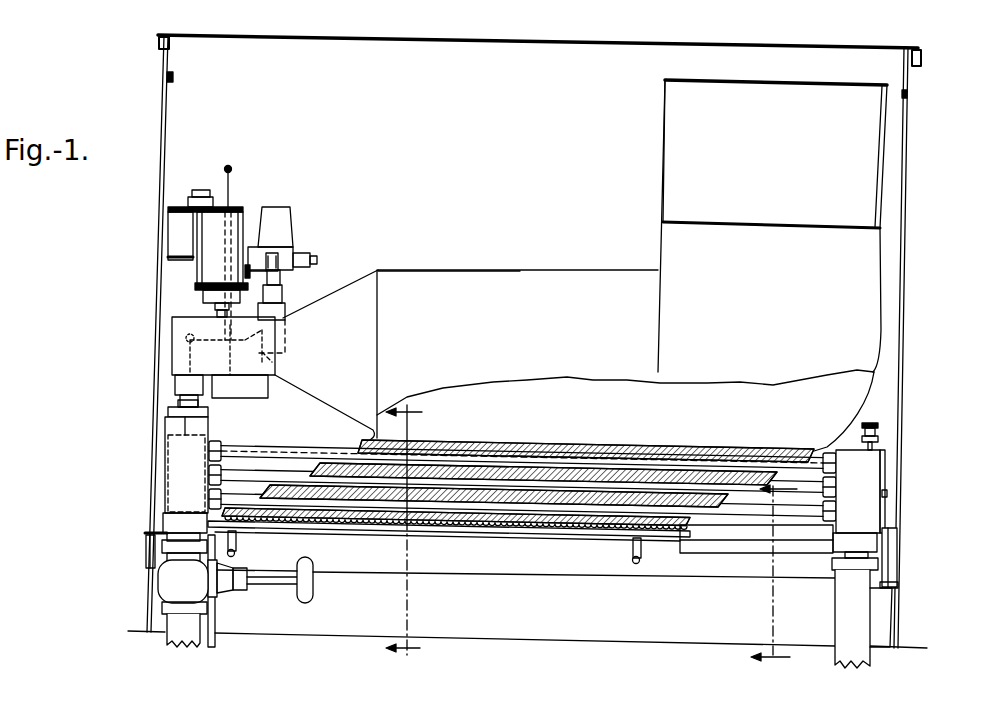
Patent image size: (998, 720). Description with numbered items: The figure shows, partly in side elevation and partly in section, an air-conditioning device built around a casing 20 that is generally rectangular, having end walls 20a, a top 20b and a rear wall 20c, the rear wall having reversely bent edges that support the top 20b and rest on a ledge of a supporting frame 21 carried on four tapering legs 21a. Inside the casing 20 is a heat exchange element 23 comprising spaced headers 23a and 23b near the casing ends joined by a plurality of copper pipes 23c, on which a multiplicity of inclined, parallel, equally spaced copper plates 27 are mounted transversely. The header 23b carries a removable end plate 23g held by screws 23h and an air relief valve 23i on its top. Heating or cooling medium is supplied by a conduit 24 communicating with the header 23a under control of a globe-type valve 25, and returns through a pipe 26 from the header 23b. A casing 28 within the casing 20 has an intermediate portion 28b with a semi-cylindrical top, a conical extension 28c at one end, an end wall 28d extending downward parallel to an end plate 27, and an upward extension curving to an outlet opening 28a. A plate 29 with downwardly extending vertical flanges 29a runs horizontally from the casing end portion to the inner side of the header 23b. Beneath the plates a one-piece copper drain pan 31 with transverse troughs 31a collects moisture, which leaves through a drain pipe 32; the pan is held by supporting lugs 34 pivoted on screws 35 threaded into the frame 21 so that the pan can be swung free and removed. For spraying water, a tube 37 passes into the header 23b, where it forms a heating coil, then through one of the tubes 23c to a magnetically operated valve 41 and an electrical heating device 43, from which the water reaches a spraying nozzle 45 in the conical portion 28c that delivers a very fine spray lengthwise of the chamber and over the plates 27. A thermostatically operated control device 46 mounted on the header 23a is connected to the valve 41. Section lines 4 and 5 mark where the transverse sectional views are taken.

The casing 20 is at (906, 327).
The end walls 20a is at (166, 296).
The top 20b is at (268, 35).
The rear wall 20c is at (160, 37).
The supporting frame 21 is at (898, 585).
The legs 21a is at (888, 617).
The heat exchange element 23 is at (840, 527).
The header member 23a is at (172, 462).
The header member 23b is at (860, 481).
The pipes or conduits 23c is at (456, 510).
The removable end plate 23g is at (857, 513).
The screws 23h is at (887, 458).
The air relief valve 23i is at (878, 433).
The pipe or conduit 24 is at (162, 633).
The valve 25 is at (172, 582).
The return pipe 26 is at (858, 658).
The plates 27 is at (588, 443).
The casing 28 is at (648, 272).
The outlet opening 28a is at (873, 135).
The intermediate portion 28b is at (416, 260).
The conical extension 28c is at (331, 295).
The end wall 28d is at (362, 444).
The plate 29 is at (706, 531).
The vertical flanges 29a is at (705, 553).
The drain member or pan 31 is at (298, 528).
The transverse troughs 31a is at (448, 482).
The drain pipe 32 is at (212, 618).
The supporting lugs 34 is at (234, 542).
The screws 35 is at (236, 553).
The tube or conduit 37 is at (238, 452).
The magnetically operated valve 41 is at (284, 225).
The electrical heating device 43 is at (187, 217).
The spraying nozzle 45 is at (229, 351).
The thermostatically operated control device 46 is at (173, 350).
The section line 4- 4 is at (404, 536).
The section line 5- 5 is at (774, 582).